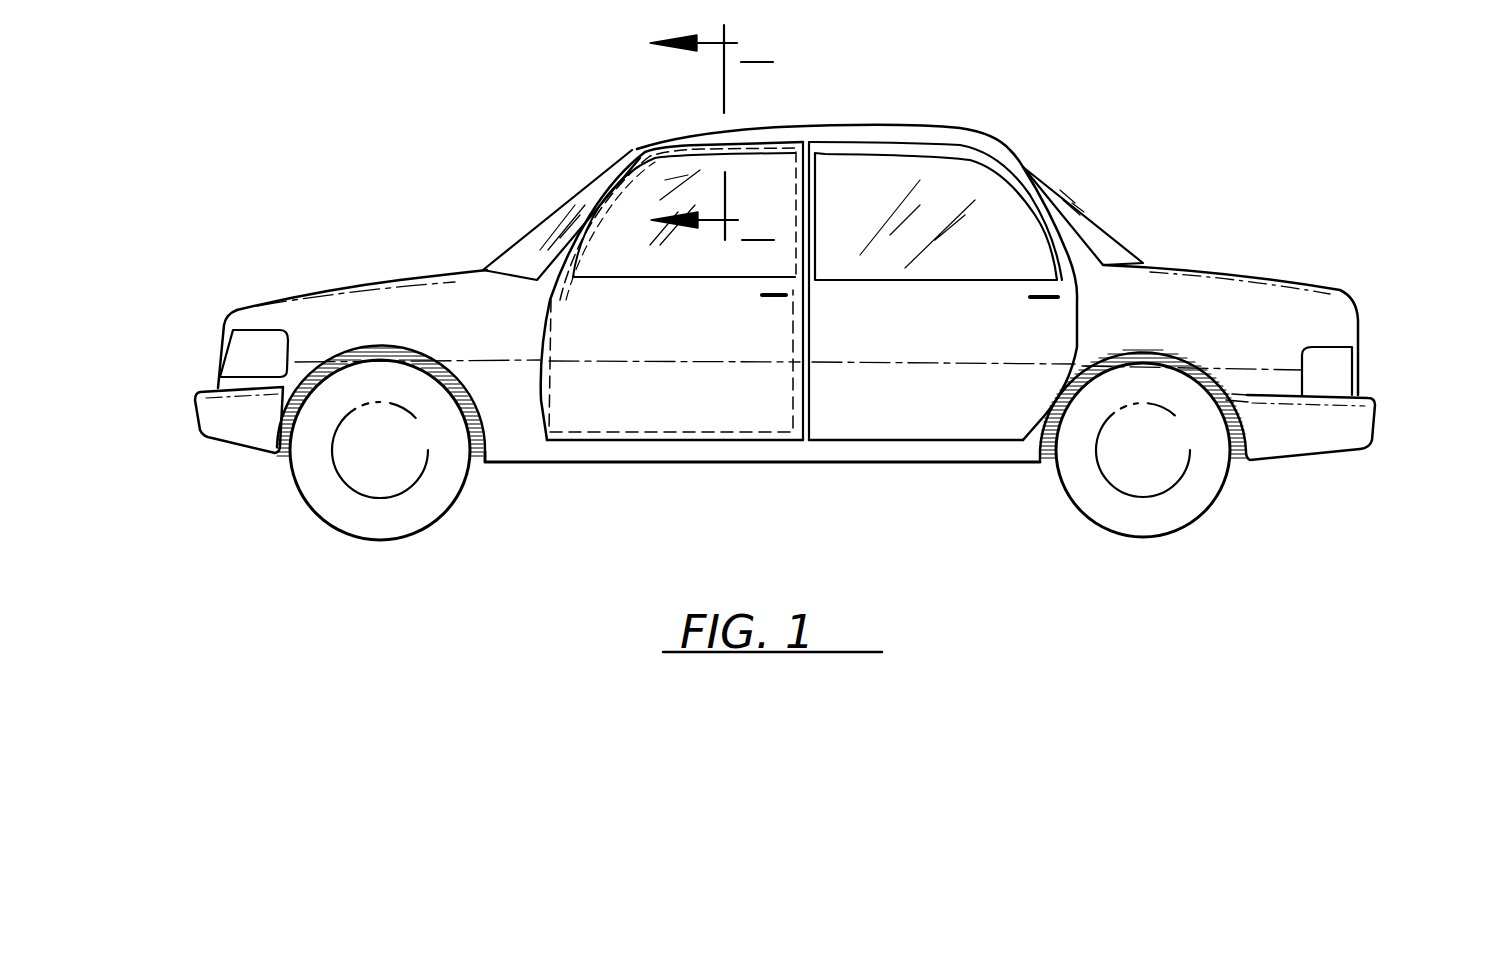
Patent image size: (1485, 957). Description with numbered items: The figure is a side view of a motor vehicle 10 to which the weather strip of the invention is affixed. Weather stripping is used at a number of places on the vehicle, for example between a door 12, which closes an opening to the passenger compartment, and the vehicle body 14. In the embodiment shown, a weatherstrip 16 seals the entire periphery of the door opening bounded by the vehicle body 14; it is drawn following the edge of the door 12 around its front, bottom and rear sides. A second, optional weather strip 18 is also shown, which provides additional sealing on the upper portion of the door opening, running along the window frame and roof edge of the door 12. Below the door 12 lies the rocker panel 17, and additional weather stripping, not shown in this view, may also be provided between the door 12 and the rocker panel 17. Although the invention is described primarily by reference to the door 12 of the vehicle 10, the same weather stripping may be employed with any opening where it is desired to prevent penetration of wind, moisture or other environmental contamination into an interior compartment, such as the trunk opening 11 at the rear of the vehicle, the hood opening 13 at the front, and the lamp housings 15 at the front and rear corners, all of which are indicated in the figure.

The motor vehicle 10 is at (1003, 108).
The trunk opening 11 is at (1218, 268).
The door 12 is at (720, 410).
The hood opening 13 is at (392, 282).
The vehicle body 14 is at (778, 135).
The lamp housings 15 is at (240, 353).
The weatherstrip 16 is at (621, 433).
The rocker panel 17 is at (676, 449).
The second weather strip 18 is at (686, 146).